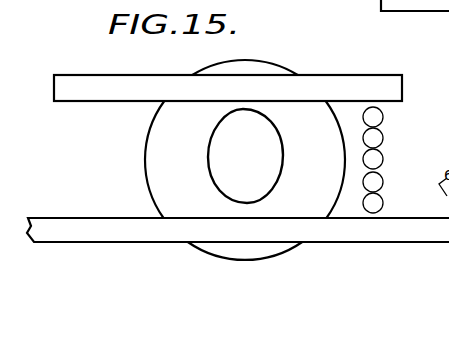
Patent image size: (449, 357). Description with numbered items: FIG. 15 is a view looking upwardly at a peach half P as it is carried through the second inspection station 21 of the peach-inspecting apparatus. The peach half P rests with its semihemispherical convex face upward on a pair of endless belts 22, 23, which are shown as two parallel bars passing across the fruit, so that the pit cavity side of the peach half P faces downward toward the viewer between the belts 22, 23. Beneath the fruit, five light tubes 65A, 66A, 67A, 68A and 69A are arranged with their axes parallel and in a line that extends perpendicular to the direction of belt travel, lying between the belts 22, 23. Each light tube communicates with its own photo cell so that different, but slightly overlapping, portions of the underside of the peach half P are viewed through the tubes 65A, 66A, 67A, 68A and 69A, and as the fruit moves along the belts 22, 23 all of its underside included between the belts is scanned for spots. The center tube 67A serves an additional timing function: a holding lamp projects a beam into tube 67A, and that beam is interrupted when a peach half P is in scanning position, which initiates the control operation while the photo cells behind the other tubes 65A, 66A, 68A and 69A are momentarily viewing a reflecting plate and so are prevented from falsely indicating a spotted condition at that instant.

The inspection station 21 is at (325, 62).
The endless belt 22 is at (93, 82).
The endless belt 23 is at (79, 234).
The peach half P is at (152, 146).
The light tube 65A is at (383, 116).
The light tube 66A is at (383, 139).
The light tube 67A is at (383, 160).
The light tube 68A is at (383, 182).
The light tube 69A is at (383, 203).